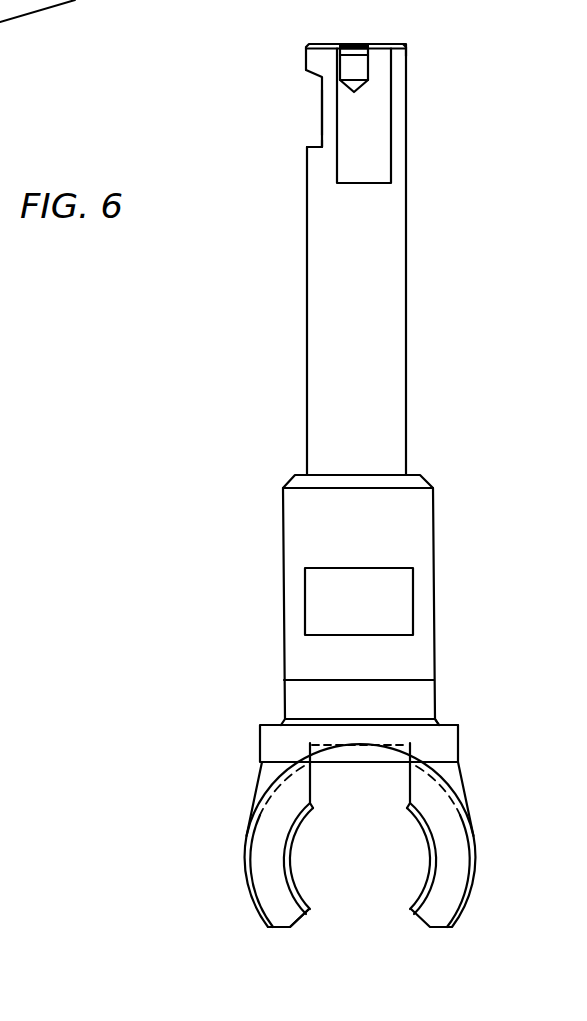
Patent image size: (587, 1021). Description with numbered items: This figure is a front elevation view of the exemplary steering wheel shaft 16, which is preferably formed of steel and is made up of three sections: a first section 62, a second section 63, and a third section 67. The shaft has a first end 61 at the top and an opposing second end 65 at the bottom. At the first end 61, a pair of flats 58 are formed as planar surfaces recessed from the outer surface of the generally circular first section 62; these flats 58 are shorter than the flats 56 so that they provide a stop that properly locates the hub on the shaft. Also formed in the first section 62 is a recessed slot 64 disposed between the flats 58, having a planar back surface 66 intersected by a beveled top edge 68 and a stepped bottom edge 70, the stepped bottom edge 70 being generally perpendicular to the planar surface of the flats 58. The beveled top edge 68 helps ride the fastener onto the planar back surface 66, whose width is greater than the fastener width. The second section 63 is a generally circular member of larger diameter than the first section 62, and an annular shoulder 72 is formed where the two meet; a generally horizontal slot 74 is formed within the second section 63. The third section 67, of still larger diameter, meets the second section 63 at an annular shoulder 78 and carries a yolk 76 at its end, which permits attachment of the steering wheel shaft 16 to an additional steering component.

The steering wheel shaft 16 is at (350, 484).
The flats 56 is at (70, 0).
The flats 58 is at (382, 133).
The first end 61 is at (394, 44).
The first section 62 is at (296, 258).
The second section 63 is at (278, 562).
The recessed slot 64 is at (297, 108).
The second end 65 is at (297, 917).
The planar back surface 66 is at (322, 124).
The third section 67 is at (248, 744).
The beveled top edge 68 is at (305, 70).
The stepped bottom edge 70 is at (306, 146).
The annular shoulder 72 is at (418, 474).
The slot 74 is at (397, 605).
The yolk 76 is at (448, 868).
The annular shoulder 78 is at (438, 723).